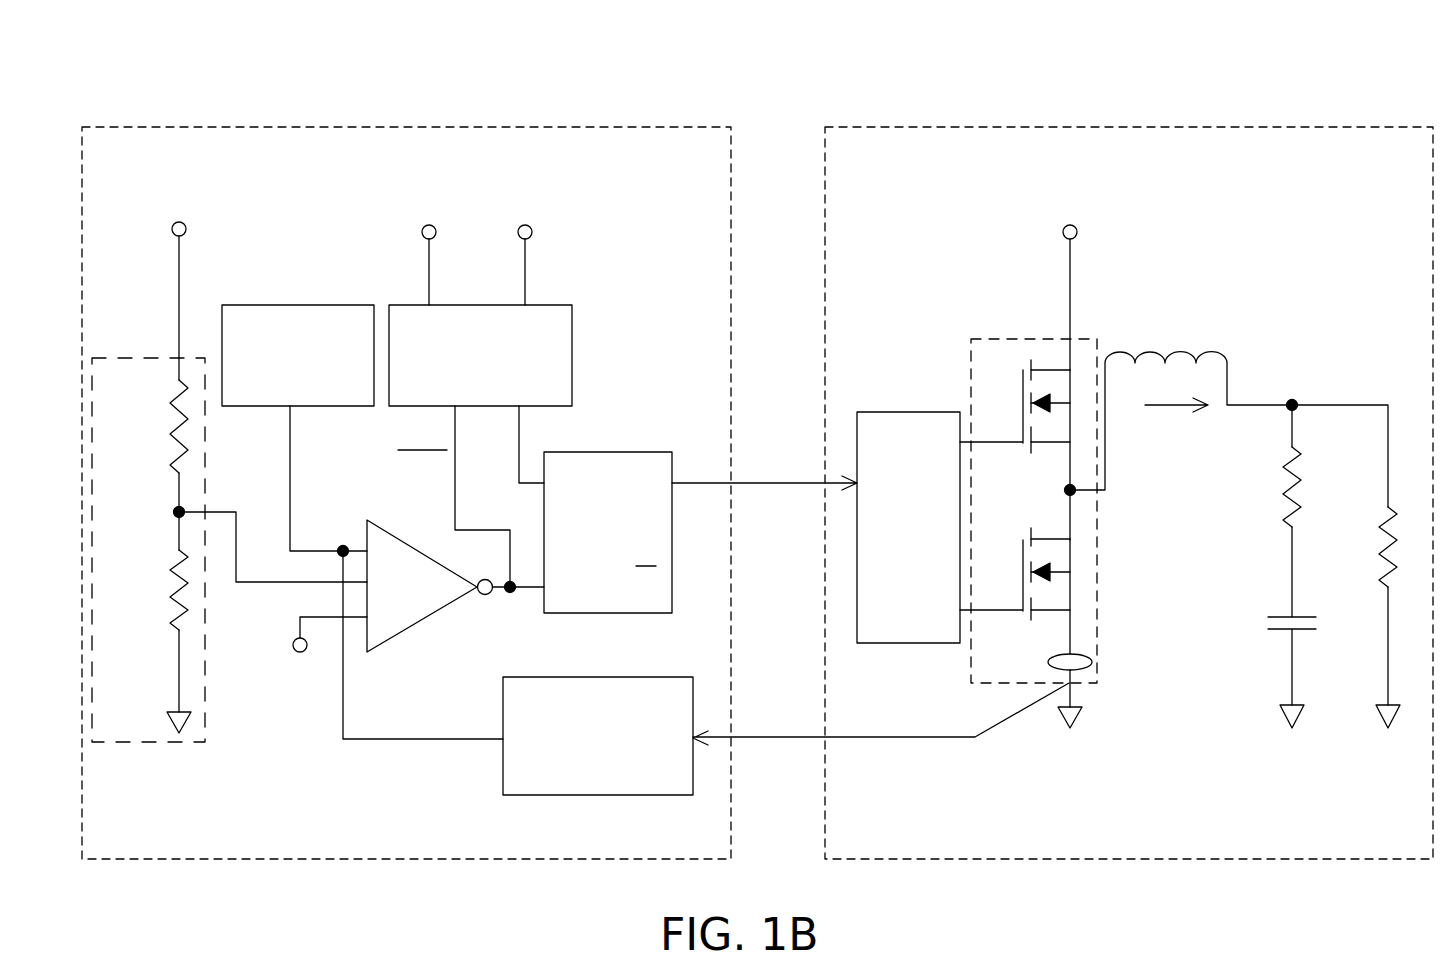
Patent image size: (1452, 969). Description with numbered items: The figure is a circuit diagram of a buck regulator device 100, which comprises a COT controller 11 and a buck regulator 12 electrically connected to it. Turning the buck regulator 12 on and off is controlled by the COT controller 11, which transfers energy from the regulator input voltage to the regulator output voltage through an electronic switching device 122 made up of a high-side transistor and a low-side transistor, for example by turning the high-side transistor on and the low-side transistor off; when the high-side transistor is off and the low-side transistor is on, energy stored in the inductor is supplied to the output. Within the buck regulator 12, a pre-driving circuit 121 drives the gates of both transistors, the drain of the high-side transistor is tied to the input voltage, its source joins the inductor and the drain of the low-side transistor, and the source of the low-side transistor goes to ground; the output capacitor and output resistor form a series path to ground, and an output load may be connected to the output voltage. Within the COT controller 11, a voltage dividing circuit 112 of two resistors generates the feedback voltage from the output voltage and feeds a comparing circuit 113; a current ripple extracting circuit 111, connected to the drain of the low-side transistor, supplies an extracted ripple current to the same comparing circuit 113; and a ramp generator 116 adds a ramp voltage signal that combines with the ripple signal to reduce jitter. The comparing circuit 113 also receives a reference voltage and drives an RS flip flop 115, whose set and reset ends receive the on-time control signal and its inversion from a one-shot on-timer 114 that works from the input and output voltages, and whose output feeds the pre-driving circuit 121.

The buck regulator device 100 is at (222, 80).
The COT controller 11 is at (665, 127).
The buck regulator 12 is at (1393, 127).
The current ripple extracting circuit 111 is at (615, 677).
The voltage dividing circuit 112 is at (193, 742).
The comparing circuit 113 is at (403, 630).
The one-shot on-timer 114 is at (550, 305).
The RS flip flop 115 is at (637, 452).
The ramp generator 116 is at (340, 305).
The pre-driving circuit 121 is at (880, 412).
The electronic switching device 122 is at (1025, 339).